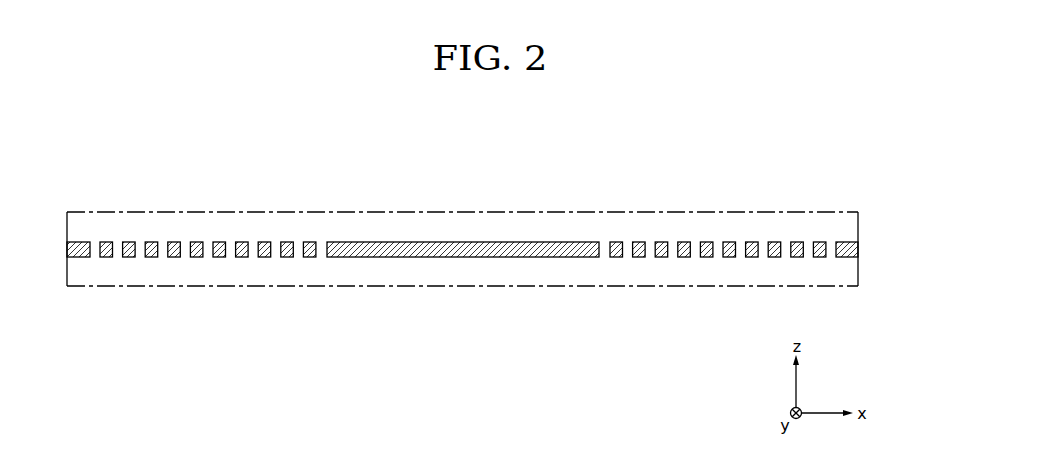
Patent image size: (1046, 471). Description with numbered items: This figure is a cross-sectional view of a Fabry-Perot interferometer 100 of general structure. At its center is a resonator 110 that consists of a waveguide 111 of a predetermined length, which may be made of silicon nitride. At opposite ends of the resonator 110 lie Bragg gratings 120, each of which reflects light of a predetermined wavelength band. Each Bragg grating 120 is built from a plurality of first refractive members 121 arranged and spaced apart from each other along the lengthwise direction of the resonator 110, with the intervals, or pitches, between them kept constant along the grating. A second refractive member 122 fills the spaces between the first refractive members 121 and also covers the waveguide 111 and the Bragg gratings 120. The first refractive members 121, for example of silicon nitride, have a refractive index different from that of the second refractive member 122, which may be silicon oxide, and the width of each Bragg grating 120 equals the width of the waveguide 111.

The Fabry-Perot interferometer 100 is at (862, 186).
The resonator 110 is at (328, 199).
The waveguide 111 is at (462, 258).
The Bragg grating 120 is at (317, 199).
The first refractive members 121 is at (311, 258).
The second refractive member 122 is at (298, 258).